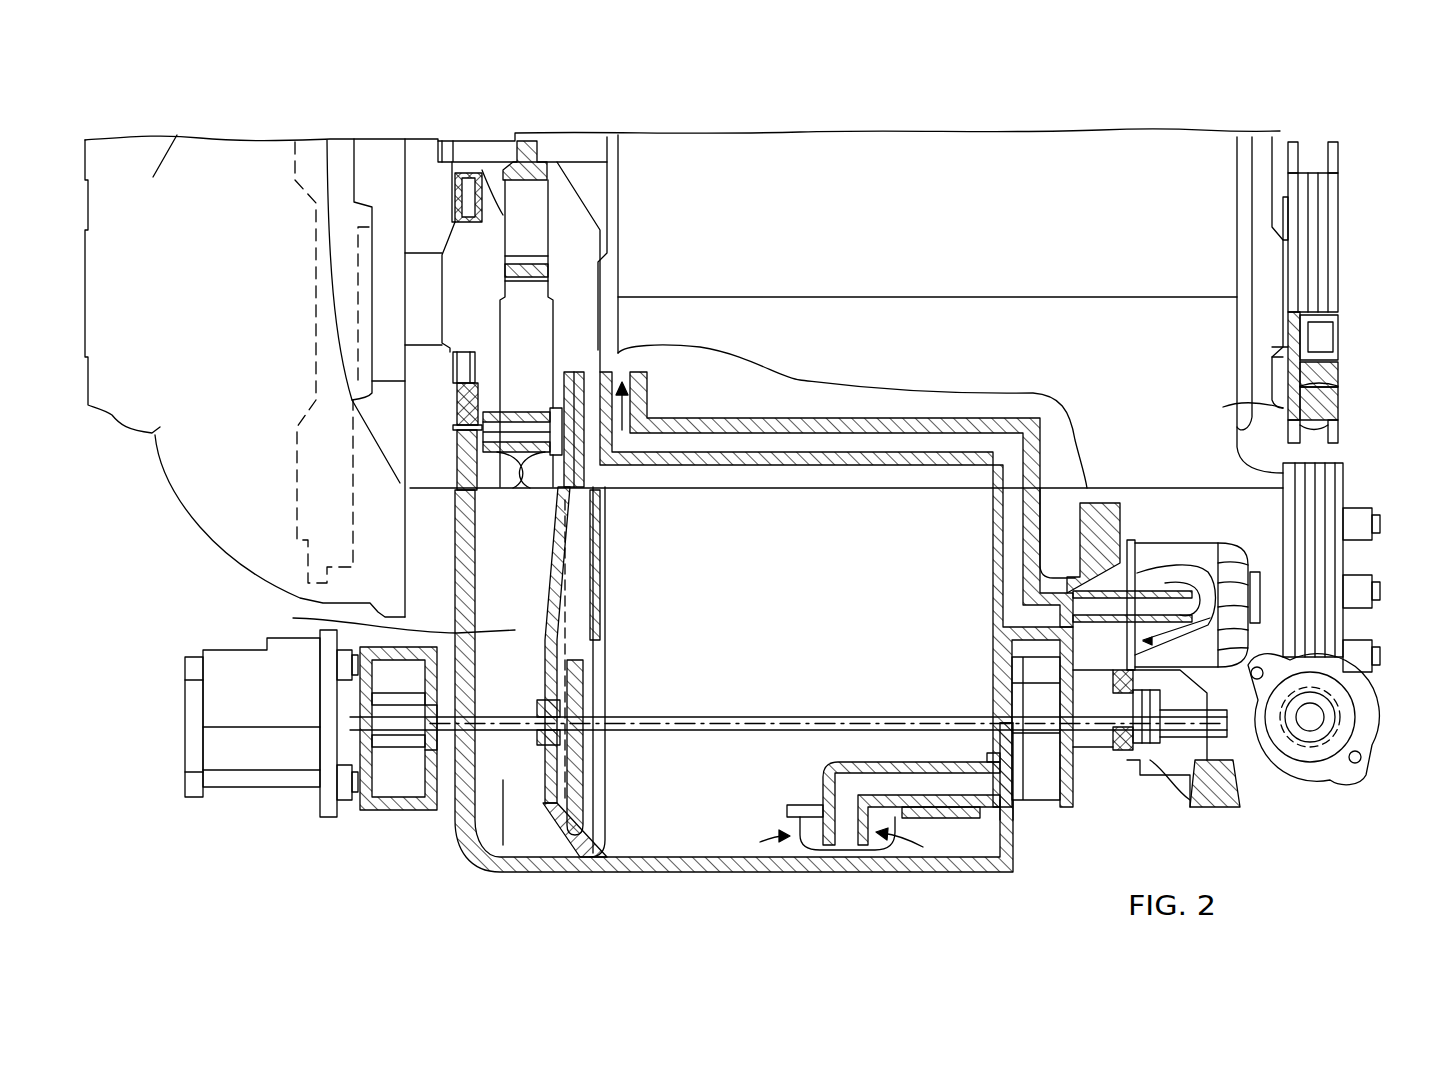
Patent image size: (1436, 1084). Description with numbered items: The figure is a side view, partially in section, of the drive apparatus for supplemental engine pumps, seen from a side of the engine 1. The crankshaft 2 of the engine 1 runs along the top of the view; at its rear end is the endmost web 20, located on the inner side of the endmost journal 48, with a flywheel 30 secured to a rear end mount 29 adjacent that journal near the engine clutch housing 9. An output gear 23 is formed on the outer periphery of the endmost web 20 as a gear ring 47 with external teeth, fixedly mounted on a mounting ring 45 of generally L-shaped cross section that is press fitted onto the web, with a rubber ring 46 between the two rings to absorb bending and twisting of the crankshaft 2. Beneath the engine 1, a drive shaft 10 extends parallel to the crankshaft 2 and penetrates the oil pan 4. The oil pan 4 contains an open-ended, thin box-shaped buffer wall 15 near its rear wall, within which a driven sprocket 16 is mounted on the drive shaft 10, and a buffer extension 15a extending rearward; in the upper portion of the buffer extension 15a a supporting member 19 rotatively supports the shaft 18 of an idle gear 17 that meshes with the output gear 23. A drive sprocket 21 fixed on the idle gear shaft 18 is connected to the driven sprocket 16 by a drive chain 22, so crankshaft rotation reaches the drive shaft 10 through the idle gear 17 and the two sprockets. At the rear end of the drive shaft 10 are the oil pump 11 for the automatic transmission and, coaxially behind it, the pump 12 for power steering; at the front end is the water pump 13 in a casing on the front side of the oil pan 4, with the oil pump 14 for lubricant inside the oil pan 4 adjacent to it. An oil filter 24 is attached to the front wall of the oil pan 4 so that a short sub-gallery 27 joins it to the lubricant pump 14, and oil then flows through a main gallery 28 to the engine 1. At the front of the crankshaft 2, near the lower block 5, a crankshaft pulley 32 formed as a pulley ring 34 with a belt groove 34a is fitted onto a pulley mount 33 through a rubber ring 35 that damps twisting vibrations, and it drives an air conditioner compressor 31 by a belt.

The engine 1 is at (1282, 138).
The crankshaft 2 is at (447, 220).
The oil pan 4 is at (690, 875).
The lower block 5 is at (1338, 430).
The engine clutch housing 9 is at (158, 430).
The drive shaft 10 is at (1087, 807).
The oil pump for automatic transmission 11 is at (383, 807).
The pump for power steering 12 is at (250, 787).
The water pump 13 is at (1233, 797).
The oil pump for lubricant 14 is at (1040, 793).
The buffer wall 15 is at (540, 813).
The buffer extension 15a is at (379, 618).
The sprocket 16 is at (590, 795).
The idle gear 17 is at (400, 480).
The shaft of idle gear 18 is at (453, 420).
The supporting member 19 is at (483, 487).
The endmost web 20 is at (463, 288).
The drive sprocket 21 is at (575, 450).
The drive chain 22 is at (593, 557).
The output gear 23 is at (468, 168).
The oil filter 24 is at (1250, 650).
The sub-gallery 27 is at (1002, 625).
The main gallery 28 is at (852, 440).
The rear end mount 29 is at (383, 240).
The flywheel 30 is at (340, 148).
The air conditioner compressor 31 is at (1347, 493).
The crankshaft pulley 32 is at (1348, 238).
The pulley mount 33 is at (1340, 353).
The pulley ring 34 is at (1333, 403).
The belt groove 34a is at (1317, 177).
The rubber ring 35 is at (1337, 385).
The mounting ring 45 is at (533, 171).
The rubber ring 46 is at (480, 213).
The gear ring 47 is at (442, 212).
The endmost journal 48 is at (417, 310).